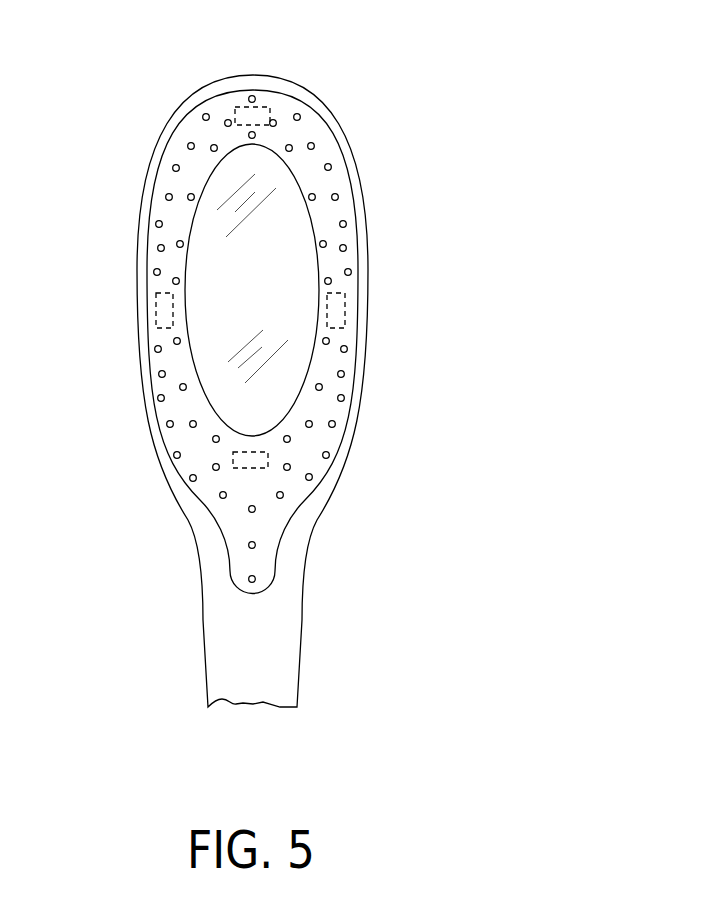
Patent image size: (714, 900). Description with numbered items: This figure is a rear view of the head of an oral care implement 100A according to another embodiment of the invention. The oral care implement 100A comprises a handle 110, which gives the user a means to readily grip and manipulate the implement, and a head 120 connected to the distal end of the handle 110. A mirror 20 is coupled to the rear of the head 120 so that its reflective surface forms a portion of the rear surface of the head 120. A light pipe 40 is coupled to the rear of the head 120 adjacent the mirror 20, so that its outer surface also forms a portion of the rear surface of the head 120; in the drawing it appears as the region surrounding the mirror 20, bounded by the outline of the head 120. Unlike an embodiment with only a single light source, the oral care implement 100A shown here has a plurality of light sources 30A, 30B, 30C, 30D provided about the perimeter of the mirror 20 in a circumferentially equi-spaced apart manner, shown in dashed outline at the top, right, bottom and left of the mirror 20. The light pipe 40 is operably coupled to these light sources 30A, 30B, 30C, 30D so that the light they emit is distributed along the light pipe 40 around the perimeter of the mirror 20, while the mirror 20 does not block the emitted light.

The oral care implement 100A is at (490, 135).
The handle 110 is at (298, 702).
The head 120 is at (145, 427).
The light pipe 40 is at (331, 220).
The mirror 20 is at (268, 298).
The light source 30A is at (261, 107).
The light source 30B is at (347, 303).
The light source 30C is at (263, 470).
The light source 30D is at (157, 303).